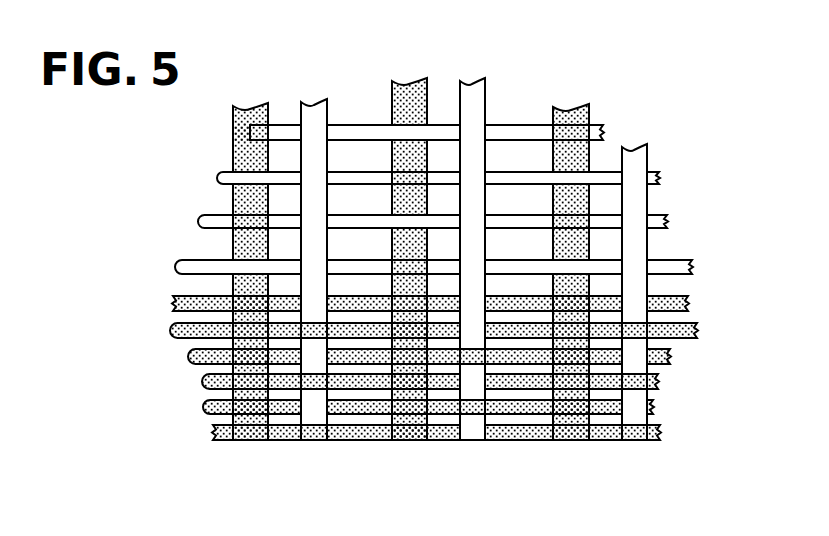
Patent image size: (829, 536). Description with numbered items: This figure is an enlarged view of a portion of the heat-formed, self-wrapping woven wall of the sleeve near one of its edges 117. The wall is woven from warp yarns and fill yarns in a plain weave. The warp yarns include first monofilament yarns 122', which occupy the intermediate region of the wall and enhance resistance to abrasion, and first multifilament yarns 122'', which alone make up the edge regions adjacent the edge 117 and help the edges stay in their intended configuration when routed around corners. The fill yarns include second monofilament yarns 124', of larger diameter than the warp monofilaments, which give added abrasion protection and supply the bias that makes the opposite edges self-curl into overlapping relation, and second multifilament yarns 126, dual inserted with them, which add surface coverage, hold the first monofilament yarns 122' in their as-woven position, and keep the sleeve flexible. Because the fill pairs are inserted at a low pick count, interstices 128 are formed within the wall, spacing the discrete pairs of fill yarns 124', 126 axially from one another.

The edge 117 is at (213, 431).
The first monofilament yarns 122' is at (466, 161).
The first multifilament yarns 122'' is at (475, 368).
The second monofilament yarns 124' is at (487, 222).
The second multifilament yarns 126 is at (249, 106).
The interstices 128 is at (348, 150).